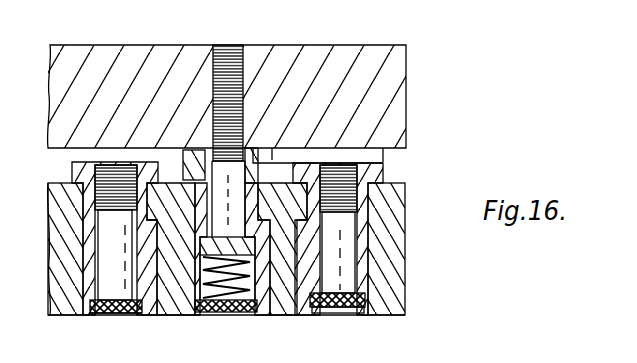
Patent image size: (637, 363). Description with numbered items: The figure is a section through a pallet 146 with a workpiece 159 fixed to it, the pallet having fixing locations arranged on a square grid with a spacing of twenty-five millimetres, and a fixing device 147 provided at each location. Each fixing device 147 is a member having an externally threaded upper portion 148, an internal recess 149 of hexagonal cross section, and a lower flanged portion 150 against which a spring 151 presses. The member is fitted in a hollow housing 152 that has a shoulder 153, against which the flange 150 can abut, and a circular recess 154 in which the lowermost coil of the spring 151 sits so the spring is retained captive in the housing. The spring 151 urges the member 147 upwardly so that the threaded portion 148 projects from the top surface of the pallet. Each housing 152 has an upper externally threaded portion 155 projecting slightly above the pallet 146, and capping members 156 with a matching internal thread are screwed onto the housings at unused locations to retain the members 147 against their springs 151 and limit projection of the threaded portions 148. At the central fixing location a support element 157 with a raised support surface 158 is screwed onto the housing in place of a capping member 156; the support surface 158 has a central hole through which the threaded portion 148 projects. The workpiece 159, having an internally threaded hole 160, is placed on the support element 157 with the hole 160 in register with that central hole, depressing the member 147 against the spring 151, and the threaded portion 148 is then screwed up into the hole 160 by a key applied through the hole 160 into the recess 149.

The pallet 146 is at (392, 203).
The fixing device 147 is at (343, 257).
The externally threaded upper portion 148 is at (80, 162).
The internal recess 149 is at (390, 167).
The lower flanged portion 150 is at (363, 292).
The spring 151 is at (232, 295).
The hollow housing 152 is at (300, 278).
The shoulder 153 is at (56, 305).
The circular recess 154 is at (100, 300).
The upper externally threaded portion 155 is at (151, 183).
The capping member 156 is at (392, 100).
The support element 157 is at (254, 162).
The raised support surface 158 is at (250, 165).
The workpiece 159 is at (338, 62).
The internally threaded hole 160 is at (240, 62).